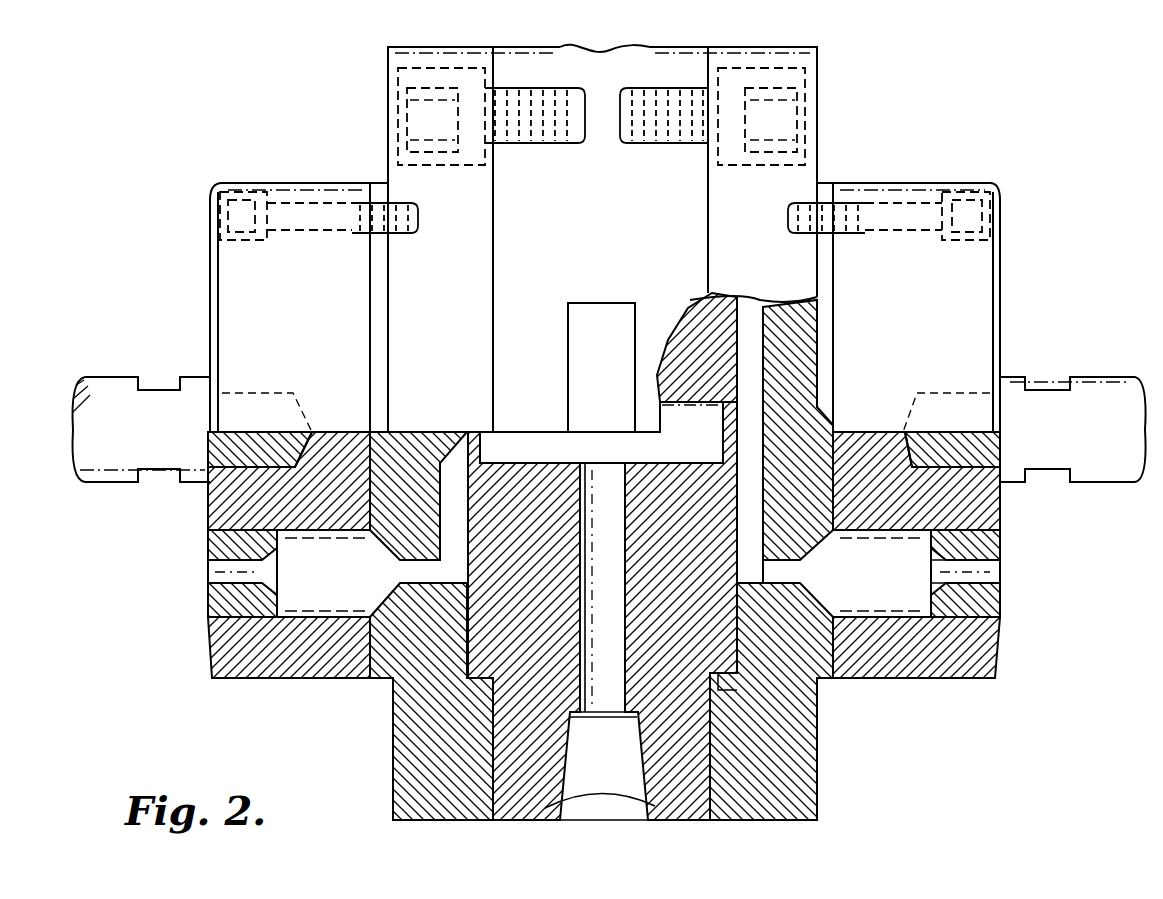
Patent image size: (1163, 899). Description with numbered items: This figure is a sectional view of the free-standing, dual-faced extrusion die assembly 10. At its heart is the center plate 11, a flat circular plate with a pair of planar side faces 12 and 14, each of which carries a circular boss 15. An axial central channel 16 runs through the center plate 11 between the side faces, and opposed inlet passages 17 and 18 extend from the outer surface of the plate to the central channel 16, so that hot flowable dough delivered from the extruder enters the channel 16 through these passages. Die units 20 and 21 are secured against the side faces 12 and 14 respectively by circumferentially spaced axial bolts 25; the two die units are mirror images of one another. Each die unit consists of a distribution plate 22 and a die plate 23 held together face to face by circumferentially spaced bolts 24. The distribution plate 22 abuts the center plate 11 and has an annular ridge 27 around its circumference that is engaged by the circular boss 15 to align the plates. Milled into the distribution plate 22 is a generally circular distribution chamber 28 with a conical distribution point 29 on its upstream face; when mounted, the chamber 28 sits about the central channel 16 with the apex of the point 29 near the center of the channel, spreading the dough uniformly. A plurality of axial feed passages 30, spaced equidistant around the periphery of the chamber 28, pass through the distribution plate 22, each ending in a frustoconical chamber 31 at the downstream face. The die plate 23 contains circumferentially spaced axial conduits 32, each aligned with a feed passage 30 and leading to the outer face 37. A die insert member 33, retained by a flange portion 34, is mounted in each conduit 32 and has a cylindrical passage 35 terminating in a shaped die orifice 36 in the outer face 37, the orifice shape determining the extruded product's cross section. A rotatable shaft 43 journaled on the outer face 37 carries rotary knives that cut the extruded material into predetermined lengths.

The die assembly 10 is at (218, 115).
The center plate 11 is at (675, 55).
The planar side face 12 is at (722, 805).
The planar side face 14 is at (492, 803).
The circular boss 15 is at (748, 630).
The axial central channel 16 is at (691, 426).
The inlet passage 17 is at (598, 48).
The inlet passage 18 is at (585, 800).
The die unit 20 is at (930, 121).
The die unit 21 is at (357, 125).
The distribution plate 22 is at (476, 48).
The die plate 23 is at (300, 183).
The bolts 24 is at (242, 240).
The axial bolts 25 is at (400, 63).
The annular ridge 27 is at (722, 688).
The distribution chamber 28 is at (745, 318).
The conical distribution point 29 is at (718, 465).
The axial feed passages 30 is at (820, 574).
The frustoconical chamber 31 is at (828, 548).
The axial conduits 32 is at (880, 614).
The die insert member 33 is at (998, 615).
The flange portion 34 is at (1000, 520).
The cylindrical passage 35 is at (990, 573).
The die orifice 36 is at (1010, 552).
The outer face 37 is at (1003, 335).
The rotatable shaft 43 is at (1115, 377).